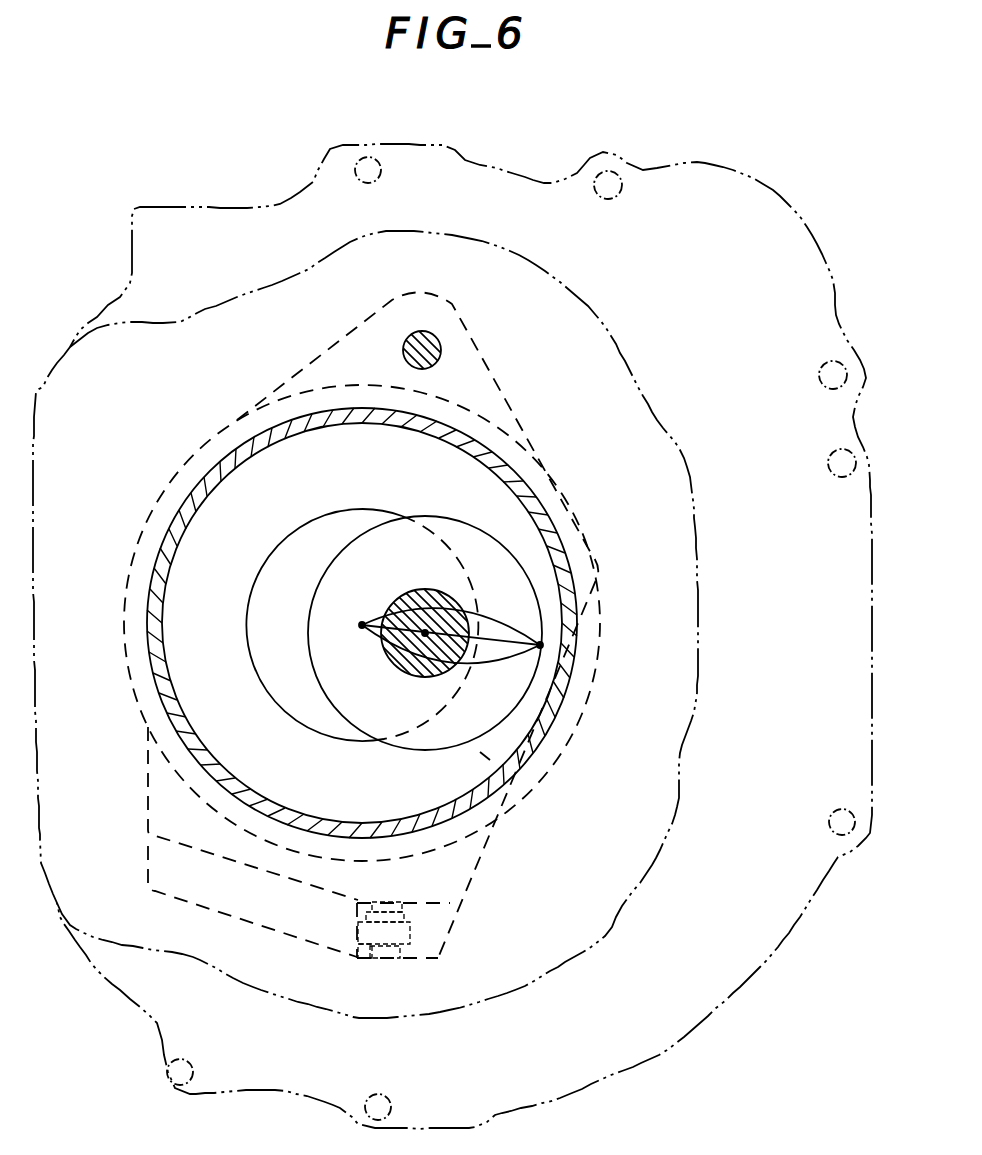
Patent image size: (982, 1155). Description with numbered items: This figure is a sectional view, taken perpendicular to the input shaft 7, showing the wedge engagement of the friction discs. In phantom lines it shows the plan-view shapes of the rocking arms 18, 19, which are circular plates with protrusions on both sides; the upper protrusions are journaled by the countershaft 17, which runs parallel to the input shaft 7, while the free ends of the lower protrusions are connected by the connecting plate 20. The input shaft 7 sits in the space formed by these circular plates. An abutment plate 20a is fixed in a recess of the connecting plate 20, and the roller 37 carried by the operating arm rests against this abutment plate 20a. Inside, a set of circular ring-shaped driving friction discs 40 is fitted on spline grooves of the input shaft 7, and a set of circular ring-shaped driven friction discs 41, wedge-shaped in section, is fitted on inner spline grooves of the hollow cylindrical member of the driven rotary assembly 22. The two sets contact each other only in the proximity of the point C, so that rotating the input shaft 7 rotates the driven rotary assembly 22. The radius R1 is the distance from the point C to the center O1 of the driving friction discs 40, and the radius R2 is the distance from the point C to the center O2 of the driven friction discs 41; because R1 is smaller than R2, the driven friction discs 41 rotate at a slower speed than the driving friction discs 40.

The input shaft 7 is at (442, 592).
The countershaft 17 is at (430, 335).
The rocking arm 18 is at (245, 417).
The rocking arm 19 is at (245, 417).
The connecting plate 20 is at (148, 862).
The abutment plate 20a is at (355, 940).
The driven rotary assembly 22 is at (528, 500).
The roller 37 is at (410, 938).
The driving friction disc 40 is at (523, 697).
The driven friction disc 41 is at (490, 760).
The center of the set of driving friction discs O1 is at (413, 642).
The center of the set of driven friction discs O2 is at (362, 623).
The radius R1 is at (497, 658).
The radius R2 is at (523, 622).
The contact point C is at (542, 645).